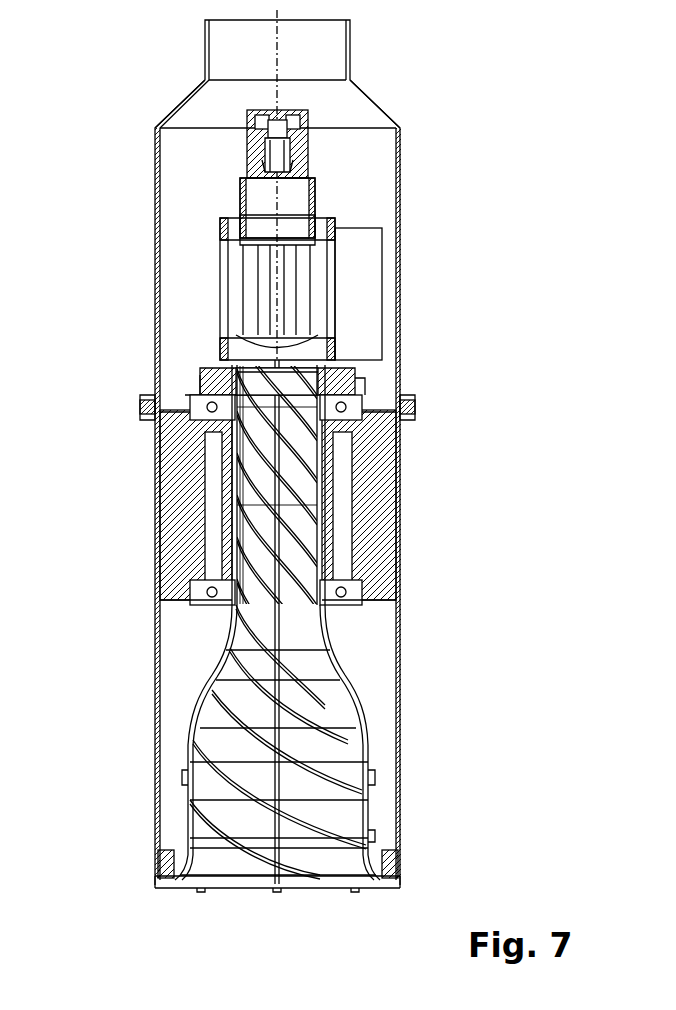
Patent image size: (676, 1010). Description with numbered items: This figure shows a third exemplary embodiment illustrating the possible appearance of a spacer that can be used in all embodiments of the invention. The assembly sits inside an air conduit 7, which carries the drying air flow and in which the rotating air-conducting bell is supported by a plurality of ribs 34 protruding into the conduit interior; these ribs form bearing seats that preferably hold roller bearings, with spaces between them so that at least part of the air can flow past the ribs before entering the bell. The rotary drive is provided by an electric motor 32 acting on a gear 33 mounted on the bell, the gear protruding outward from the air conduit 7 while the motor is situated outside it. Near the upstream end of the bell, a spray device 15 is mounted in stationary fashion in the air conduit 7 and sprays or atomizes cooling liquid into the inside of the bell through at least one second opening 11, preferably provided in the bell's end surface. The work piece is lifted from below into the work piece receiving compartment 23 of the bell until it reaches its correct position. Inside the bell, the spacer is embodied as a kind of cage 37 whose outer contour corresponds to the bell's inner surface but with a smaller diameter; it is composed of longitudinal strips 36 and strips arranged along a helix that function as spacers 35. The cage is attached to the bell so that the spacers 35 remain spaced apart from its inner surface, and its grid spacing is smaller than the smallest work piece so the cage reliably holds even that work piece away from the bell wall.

The air conduit 7 is at (158, 255).
The spray device 15 is at (302, 150).
The second opening 11 is at (300, 312).
The electric motor 32 is at (360, 258).
The gear 33 is at (183, 378).
The ribs 34 is at (160, 462).
The cage 37 is at (292, 553).
The work piece receiving compartment 23 is at (265, 741).
The longitudinal strips 36 is at (228, 648).
The spacers 35 is at (195, 820).